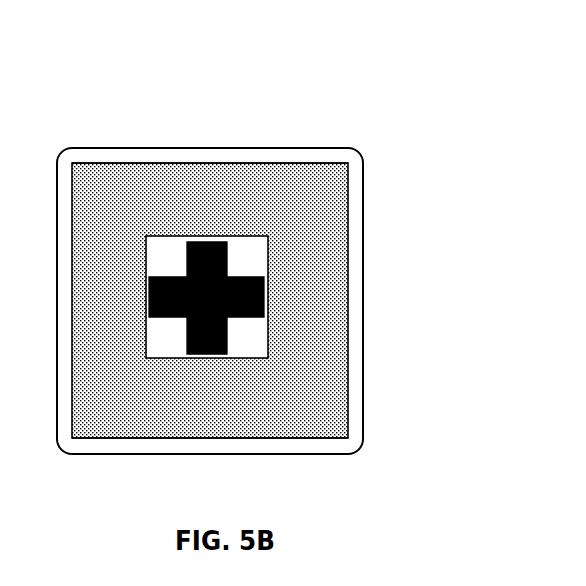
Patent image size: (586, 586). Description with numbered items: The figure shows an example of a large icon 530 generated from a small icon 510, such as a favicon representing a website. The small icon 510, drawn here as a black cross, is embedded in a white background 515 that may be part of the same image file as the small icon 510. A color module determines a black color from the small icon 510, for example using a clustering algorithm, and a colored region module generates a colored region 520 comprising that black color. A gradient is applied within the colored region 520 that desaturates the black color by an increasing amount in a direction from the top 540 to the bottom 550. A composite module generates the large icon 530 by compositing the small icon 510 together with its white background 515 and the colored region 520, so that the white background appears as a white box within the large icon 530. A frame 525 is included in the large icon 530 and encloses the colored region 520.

The large icon 530 is at (382, 38).
The frame 525 is at (333, 143).
The colored region 520 is at (325, 222).
The top 540 is at (163, 159).
The bottom 550 is at (162, 438).
The white background 515 is at (256, 352).
The small icon 510 is at (275, 287).